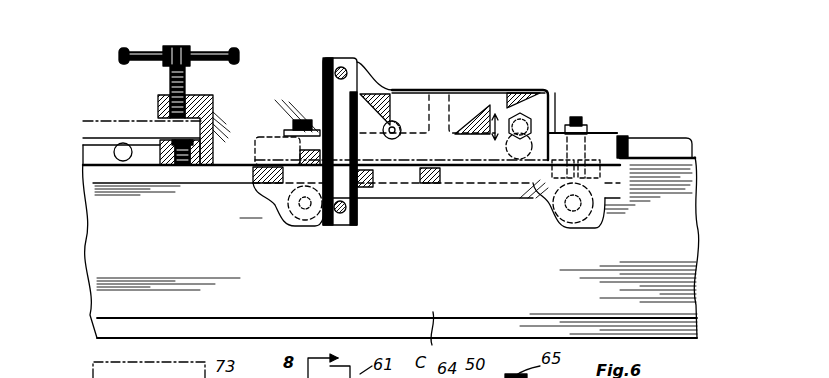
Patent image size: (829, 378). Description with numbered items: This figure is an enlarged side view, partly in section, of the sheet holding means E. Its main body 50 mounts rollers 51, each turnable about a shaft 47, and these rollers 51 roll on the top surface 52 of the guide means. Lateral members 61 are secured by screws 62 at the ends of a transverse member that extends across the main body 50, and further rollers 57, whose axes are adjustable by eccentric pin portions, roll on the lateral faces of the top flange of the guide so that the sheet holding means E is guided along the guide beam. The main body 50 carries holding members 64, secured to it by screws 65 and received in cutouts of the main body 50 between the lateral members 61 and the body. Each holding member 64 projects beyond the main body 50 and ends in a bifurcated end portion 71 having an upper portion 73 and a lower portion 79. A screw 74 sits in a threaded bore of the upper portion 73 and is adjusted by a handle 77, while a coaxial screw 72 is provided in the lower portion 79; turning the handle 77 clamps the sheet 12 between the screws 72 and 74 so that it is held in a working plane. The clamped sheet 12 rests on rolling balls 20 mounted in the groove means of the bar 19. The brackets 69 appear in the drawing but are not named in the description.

The sheet 12 is at (94, 124).
The rolling balls 20 is at (120, 138).
The bifurcated end portion 71 is at (158, 115).
The upper portion 73 is at (193, 105).
The screw 74 is at (176, 56).
The handle 77 is at (222, 54).
The screw 72 is at (172, 168).
The lower portion 79 is at (193, 176).
The lateral member 61 is at (326, 68).
The screw 62 is at (347, 72).
The sheet holding means E is at (470, 89).
The holding member 64 is at (504, 95).
The main body 50 is at (549, 101).
The screw 65 is at (533, 123).
The roller 51 is at (393, 131).
The shaft 47 is at (390, 146).
The roller 57 is at (274, 142).
The roller brackets 69 is at (300, 226).
The bar 19 is at (656, 140).
The top surface 52 is at (671, 152).